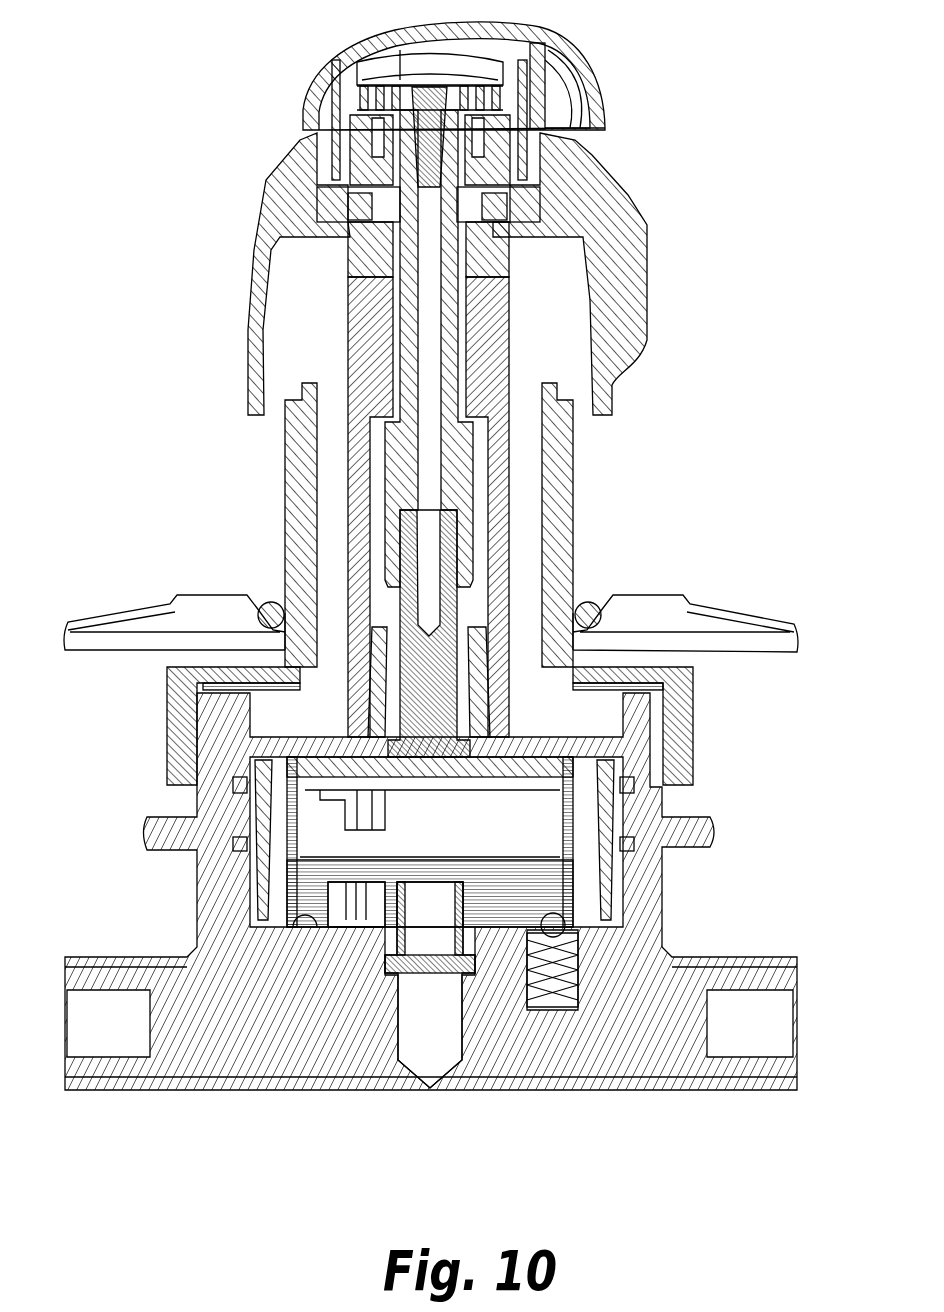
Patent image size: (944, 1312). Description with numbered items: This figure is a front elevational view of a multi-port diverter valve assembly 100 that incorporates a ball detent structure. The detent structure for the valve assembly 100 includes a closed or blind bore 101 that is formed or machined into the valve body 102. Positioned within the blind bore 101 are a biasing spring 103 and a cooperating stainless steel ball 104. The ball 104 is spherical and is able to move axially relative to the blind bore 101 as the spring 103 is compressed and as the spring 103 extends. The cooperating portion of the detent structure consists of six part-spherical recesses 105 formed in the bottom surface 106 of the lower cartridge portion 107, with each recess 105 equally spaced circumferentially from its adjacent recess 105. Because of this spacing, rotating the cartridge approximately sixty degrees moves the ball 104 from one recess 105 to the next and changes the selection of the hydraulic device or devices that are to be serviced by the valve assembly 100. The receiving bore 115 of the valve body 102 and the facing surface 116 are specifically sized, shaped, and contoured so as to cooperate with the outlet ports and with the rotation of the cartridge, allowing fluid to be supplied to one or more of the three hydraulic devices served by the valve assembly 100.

The multi-port diverter valve assembly 100 is at (737, 531).
The blind bore 101 is at (600, 972).
The valve body 102 is at (677, 1000).
The biasing spring 103 is at (550, 1000).
The stainless steel ball 104 is at (587, 905).
The part-spherical recesses 105 is at (575, 860).
The bottom surface 106 is at (300, 930).
The lower cartridge portion 107 is at (287, 890).
The receiving bore 115 is at (467, 1033).
The facing surface 116 is at (357, 905).